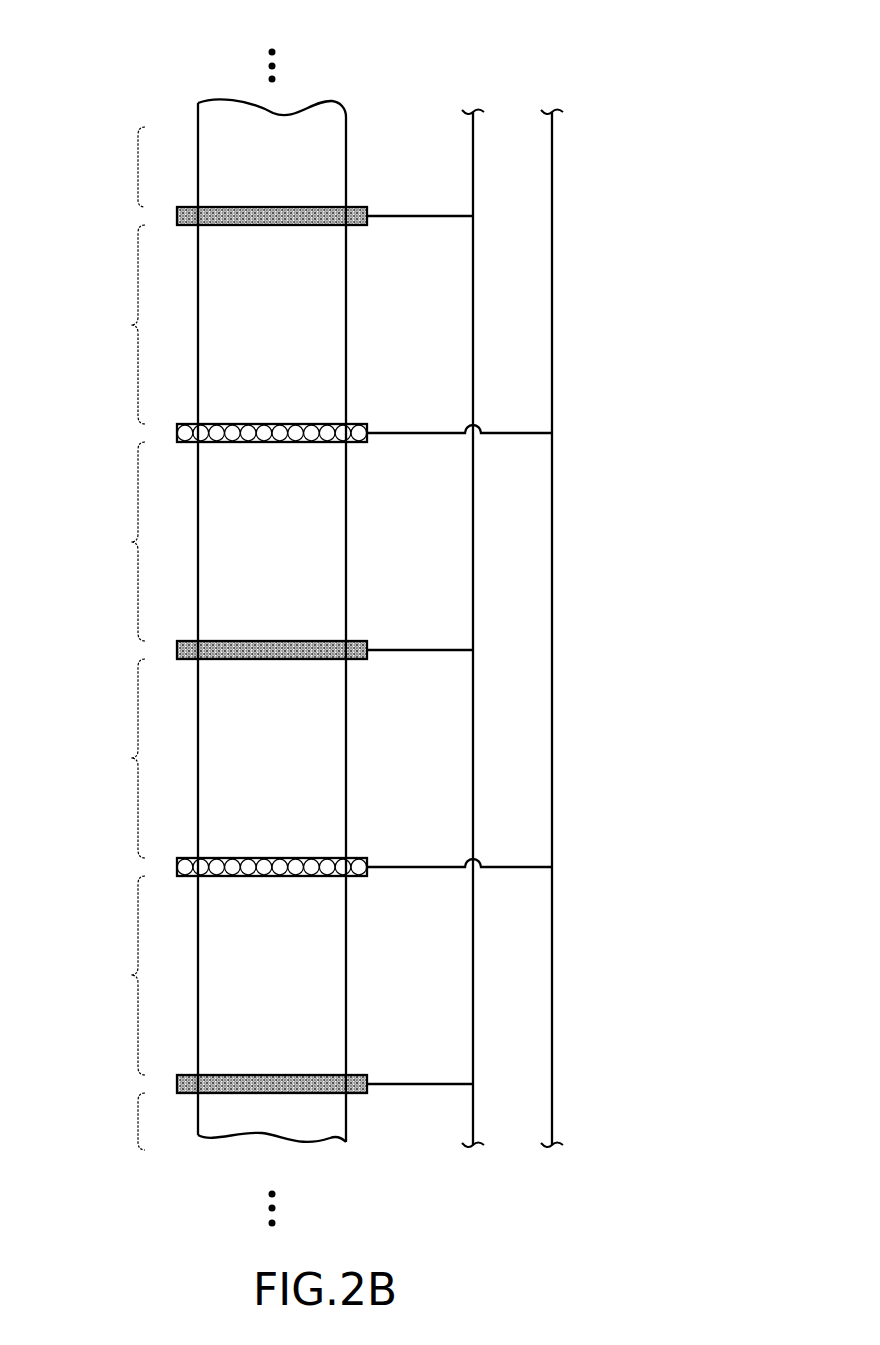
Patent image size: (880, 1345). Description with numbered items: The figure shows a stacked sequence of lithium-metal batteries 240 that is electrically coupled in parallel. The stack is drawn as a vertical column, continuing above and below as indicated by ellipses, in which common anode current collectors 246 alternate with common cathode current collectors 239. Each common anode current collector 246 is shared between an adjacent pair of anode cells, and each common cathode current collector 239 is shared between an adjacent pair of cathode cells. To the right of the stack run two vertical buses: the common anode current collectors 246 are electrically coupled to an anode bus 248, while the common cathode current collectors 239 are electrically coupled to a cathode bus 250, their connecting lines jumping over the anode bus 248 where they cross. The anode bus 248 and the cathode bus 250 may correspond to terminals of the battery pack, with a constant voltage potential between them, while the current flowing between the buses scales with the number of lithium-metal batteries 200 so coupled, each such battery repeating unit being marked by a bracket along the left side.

The lithium-metal batteries 240 is at (650, 60).
The anode bus 248 is at (473, 137).
The cathode bus 250 is at (552, 170).
The common anode current collector 246 is at (177, 216).
The common cathode current collector 239 is at (177, 433).
The lithium-metal batteries 200 is at (117, 638).